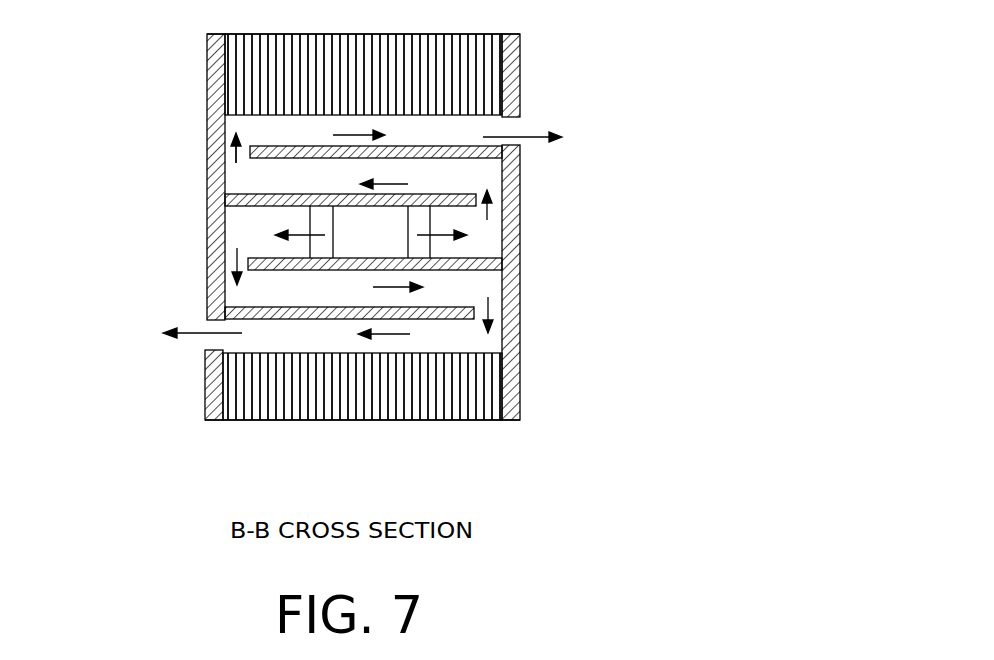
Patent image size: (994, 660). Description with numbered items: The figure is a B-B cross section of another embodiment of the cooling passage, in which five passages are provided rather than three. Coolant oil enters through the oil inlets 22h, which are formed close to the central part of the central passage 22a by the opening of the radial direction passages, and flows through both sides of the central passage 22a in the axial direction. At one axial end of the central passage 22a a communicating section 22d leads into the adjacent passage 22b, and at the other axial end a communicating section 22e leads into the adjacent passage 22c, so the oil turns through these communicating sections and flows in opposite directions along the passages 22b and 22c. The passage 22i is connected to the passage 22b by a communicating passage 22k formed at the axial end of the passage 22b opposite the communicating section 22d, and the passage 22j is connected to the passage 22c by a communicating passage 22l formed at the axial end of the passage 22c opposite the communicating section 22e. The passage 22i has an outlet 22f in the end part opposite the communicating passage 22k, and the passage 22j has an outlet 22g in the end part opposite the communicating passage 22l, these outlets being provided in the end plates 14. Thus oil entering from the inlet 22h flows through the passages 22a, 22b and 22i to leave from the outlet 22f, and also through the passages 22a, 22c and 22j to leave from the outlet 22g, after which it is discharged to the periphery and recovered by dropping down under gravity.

The end plate 14 is at (207, 273).
The central passage 22a is at (377, 228).
The passage 22b is at (283, 177).
The passage 22c is at (473, 281).
The communicating section 22d is at (495, 213).
The communicating section 22e is at (225, 252).
The outlet 22f is at (520, 128).
The outlet 22g is at (207, 340).
The oil inlet 22h is at (422, 222).
The passage 22i is at (297, 130).
The passage 22j is at (447, 333).
The communicating passage 22k is at (228, 147).
The communicating passage 22l is at (495, 306).